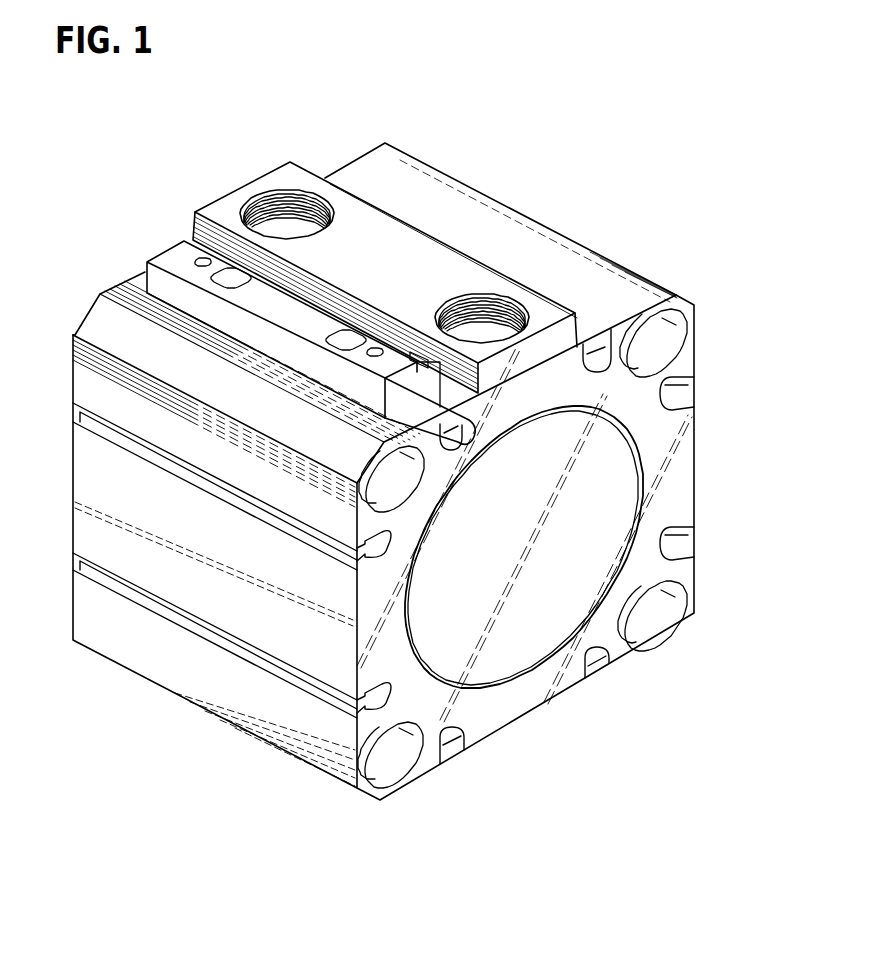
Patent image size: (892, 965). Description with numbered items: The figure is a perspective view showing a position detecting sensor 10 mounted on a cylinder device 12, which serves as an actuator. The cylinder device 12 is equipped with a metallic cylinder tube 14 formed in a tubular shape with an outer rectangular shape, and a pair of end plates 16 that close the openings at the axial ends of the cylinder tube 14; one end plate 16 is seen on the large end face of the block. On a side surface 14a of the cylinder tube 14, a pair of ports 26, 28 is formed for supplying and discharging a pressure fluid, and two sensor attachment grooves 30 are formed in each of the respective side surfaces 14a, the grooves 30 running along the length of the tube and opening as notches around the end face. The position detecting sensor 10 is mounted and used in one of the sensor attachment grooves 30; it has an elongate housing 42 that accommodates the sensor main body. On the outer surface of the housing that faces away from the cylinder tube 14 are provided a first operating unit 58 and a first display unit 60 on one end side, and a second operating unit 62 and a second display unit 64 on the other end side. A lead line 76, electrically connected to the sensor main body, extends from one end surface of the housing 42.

The position detecting sensor 10 is at (157, 242).
The cylinder device 12 is at (385, 268).
The cylinder tube 14 is at (258, 737).
The side surface 14a is at (378, 167).
The end plate 16 is at (494, 660).
The port 26 is at (287, 200).
The port 28 is at (482, 308).
The sensor attachment groove 30 is at (227, 490).
The housing 42 is at (293, 300).
The first operating unit 58 is at (234, 276).
The first display unit 60 is at (200, 257).
The second operating unit 62 is at (350, 333).
The second display unit 64 is at (380, 348).
The lead line 76 is at (477, 424).